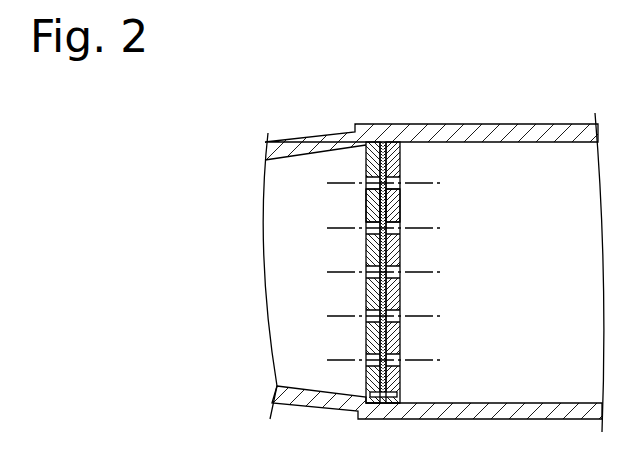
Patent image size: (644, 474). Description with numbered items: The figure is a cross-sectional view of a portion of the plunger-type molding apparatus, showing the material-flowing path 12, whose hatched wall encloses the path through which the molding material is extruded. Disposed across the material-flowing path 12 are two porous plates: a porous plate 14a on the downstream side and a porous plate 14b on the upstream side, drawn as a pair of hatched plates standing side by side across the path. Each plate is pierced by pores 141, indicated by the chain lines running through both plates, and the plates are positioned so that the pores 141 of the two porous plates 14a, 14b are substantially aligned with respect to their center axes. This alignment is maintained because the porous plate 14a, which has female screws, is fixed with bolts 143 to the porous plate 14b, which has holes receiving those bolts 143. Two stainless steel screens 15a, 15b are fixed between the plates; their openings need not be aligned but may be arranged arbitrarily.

The material-flowing path 12 is at (537, 158).
The porous plate 14a is at (366, 297).
The porous plate 14b is at (400, 296).
The pores 141 is at (366, 223).
The bolts 143 is at (392, 397).
The screen 15a is at (381, 142).
The screen 15b is at (386, 142).